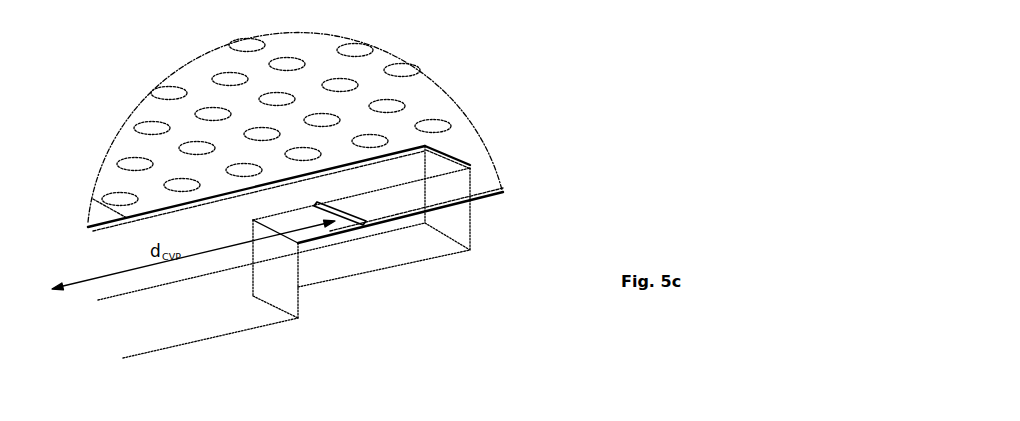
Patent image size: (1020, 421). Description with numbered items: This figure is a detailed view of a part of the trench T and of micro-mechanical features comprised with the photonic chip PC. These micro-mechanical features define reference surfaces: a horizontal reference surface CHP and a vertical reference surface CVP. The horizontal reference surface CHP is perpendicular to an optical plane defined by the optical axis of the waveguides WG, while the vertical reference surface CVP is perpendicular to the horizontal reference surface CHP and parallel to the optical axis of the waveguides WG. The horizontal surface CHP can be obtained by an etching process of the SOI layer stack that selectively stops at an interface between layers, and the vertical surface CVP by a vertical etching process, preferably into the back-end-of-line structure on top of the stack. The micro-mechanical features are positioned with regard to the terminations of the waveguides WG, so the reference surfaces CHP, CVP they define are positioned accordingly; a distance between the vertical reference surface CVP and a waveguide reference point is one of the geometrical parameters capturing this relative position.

The photonic chip PC is at (428, 90).
The waveguides WG is at (104, 226).
The vertical reference surface CVP is at (376, 221).
The horizontal reference surface CHP is at (330, 232).
The trench T is at (168, 325).